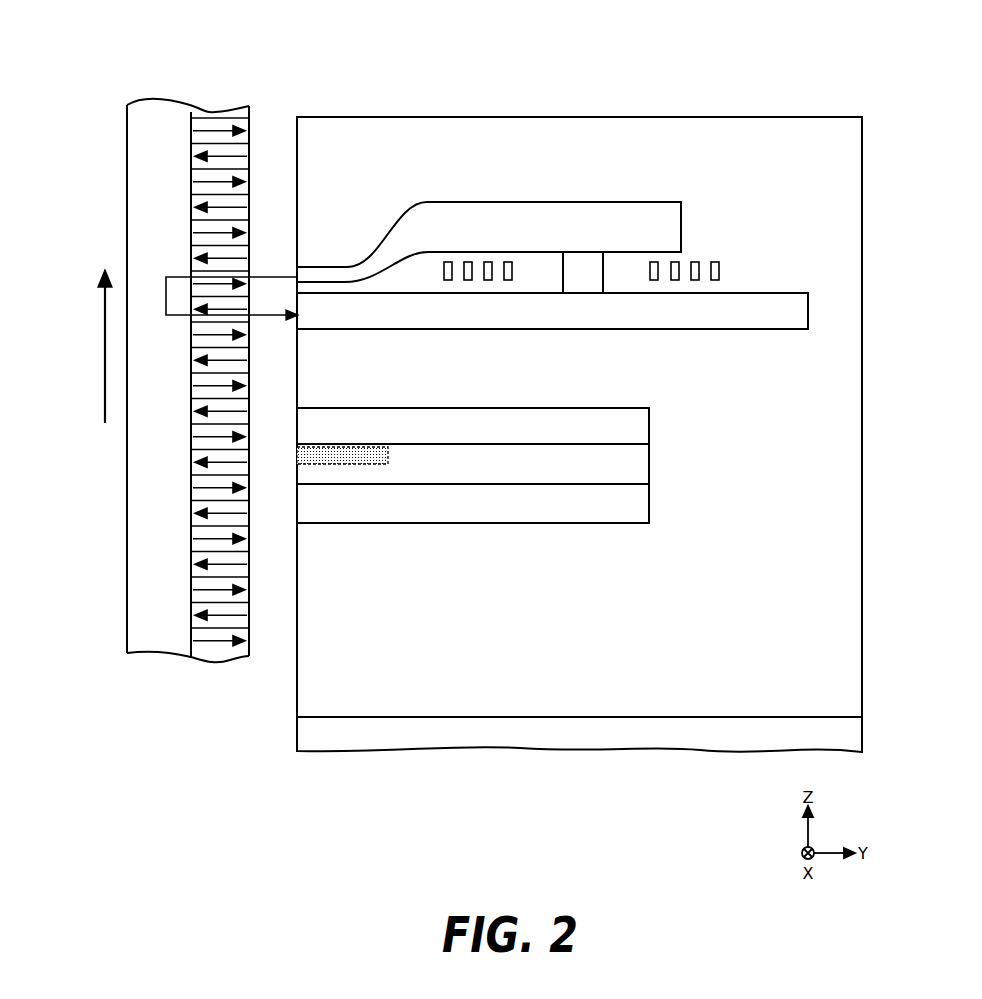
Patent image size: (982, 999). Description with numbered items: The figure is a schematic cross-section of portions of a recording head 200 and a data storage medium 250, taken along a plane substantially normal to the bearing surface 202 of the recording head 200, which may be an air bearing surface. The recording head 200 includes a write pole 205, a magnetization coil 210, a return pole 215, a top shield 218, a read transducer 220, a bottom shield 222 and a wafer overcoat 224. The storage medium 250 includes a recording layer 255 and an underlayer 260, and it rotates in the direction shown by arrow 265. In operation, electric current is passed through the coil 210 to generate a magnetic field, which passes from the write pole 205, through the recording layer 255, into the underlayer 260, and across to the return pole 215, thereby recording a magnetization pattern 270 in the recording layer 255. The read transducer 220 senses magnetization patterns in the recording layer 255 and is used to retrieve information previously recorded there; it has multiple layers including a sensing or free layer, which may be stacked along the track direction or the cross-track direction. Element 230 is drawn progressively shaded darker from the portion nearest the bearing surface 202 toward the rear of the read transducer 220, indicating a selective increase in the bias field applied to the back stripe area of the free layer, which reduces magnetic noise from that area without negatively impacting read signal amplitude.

The recording head 200 is at (703, 84).
The bearing surface 202 is at (297, 690).
The write pole 205 is at (344, 267).
The magnetization coil 210 is at (489, 262).
The return pole 215 is at (493, 310).
The top shield 218 is at (563, 428).
The read transducer 220 is at (649, 477).
The bottom shield 222 is at (580, 505).
The wafer overcoat 224 is at (779, 373).
The selective bias field shading element 230 is at (363, 464).
The data storage medium 250 is at (169, 666).
The recording layer 255 is at (211, 113).
The underlayer 260 is at (145, 630).
The arrow 265 is at (105, 347).
The magnetization pattern 270 is at (228, 120).